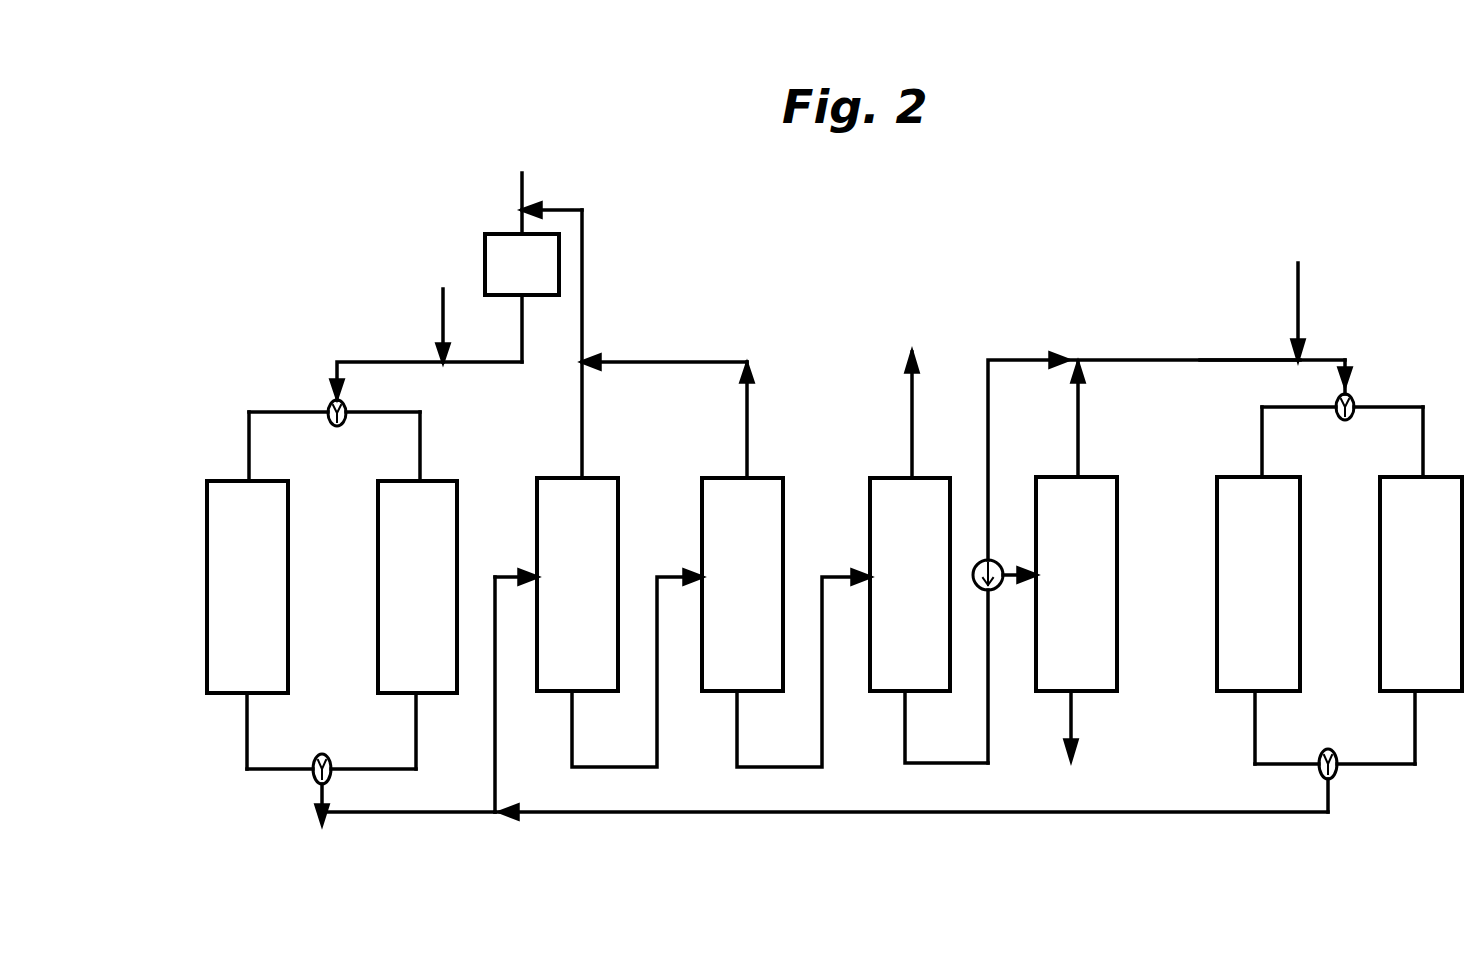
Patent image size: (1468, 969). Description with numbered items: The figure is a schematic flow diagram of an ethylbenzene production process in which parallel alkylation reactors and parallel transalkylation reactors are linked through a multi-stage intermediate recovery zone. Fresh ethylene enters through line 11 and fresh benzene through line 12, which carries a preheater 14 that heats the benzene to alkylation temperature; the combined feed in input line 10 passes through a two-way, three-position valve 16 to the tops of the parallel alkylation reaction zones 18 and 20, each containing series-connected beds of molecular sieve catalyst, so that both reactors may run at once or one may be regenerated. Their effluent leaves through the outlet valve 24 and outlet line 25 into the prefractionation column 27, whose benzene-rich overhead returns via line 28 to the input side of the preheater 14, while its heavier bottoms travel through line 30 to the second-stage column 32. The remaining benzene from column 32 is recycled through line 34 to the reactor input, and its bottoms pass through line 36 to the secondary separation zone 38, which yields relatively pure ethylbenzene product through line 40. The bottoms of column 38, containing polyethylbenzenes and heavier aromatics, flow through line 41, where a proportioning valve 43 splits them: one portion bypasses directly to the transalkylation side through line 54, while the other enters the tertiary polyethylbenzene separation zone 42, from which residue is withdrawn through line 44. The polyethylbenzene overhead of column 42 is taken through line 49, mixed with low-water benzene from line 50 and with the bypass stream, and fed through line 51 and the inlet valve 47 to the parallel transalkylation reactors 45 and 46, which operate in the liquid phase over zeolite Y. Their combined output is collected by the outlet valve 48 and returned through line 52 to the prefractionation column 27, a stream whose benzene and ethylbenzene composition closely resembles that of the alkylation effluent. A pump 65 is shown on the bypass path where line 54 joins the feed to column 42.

The alkylation reactor input line 10 is at (384, 361).
The fresh ethylene line 11 is at (443, 332).
The fresh benzene line 12 is at (522, 326).
The preheater 14 is at (508, 233).
The two-way, three-position valve 16 is at (342, 424).
The alkylation reaction zone 18 is at (207, 543).
The alkylation reaction zone 20 is at (378, 560).
The two-way, three-position outlet valve 24 is at (330, 760).
The outlet line 25 is at (368, 812).
The prefractionation column 27 is at (537, 545).
The overhead line 28 is at (582, 432).
The bottoms line 30 is at (585, 760).
The second stage benzene separation column 32 is at (702, 546).
The benzene recycle line 34 is at (656, 361).
The bottoms line 36 is at (749, 762).
The secondary separation zone 38 is at (870, 534).
The ethylbenzene product line 40 is at (912, 410).
The bottoms line 41 is at (916, 760).
The tertiary polyethylbenzene separation zone 42 is at (1100, 477).
The proportioning valve 43 is at (985, 592).
The residue line 44 is at (1072, 722).
The transalkylation reactor 45 is at (1217, 558).
The transalkylation reactor 46 is at (1380, 564).
The inlet valve 47 is at (1381, 403).
The outlet valve 48 is at (1336, 775).
The polyethylbenzene overhead line 49 is at (1245, 360).
The benzene feed line 50 is at (1298, 300).
The transalkylation inlet line 51 is at (1335, 355).
The transalkylation output line 52 is at (731, 811).
The bypass line 54 is at (988, 405).
The pump 65 is at (999, 562).